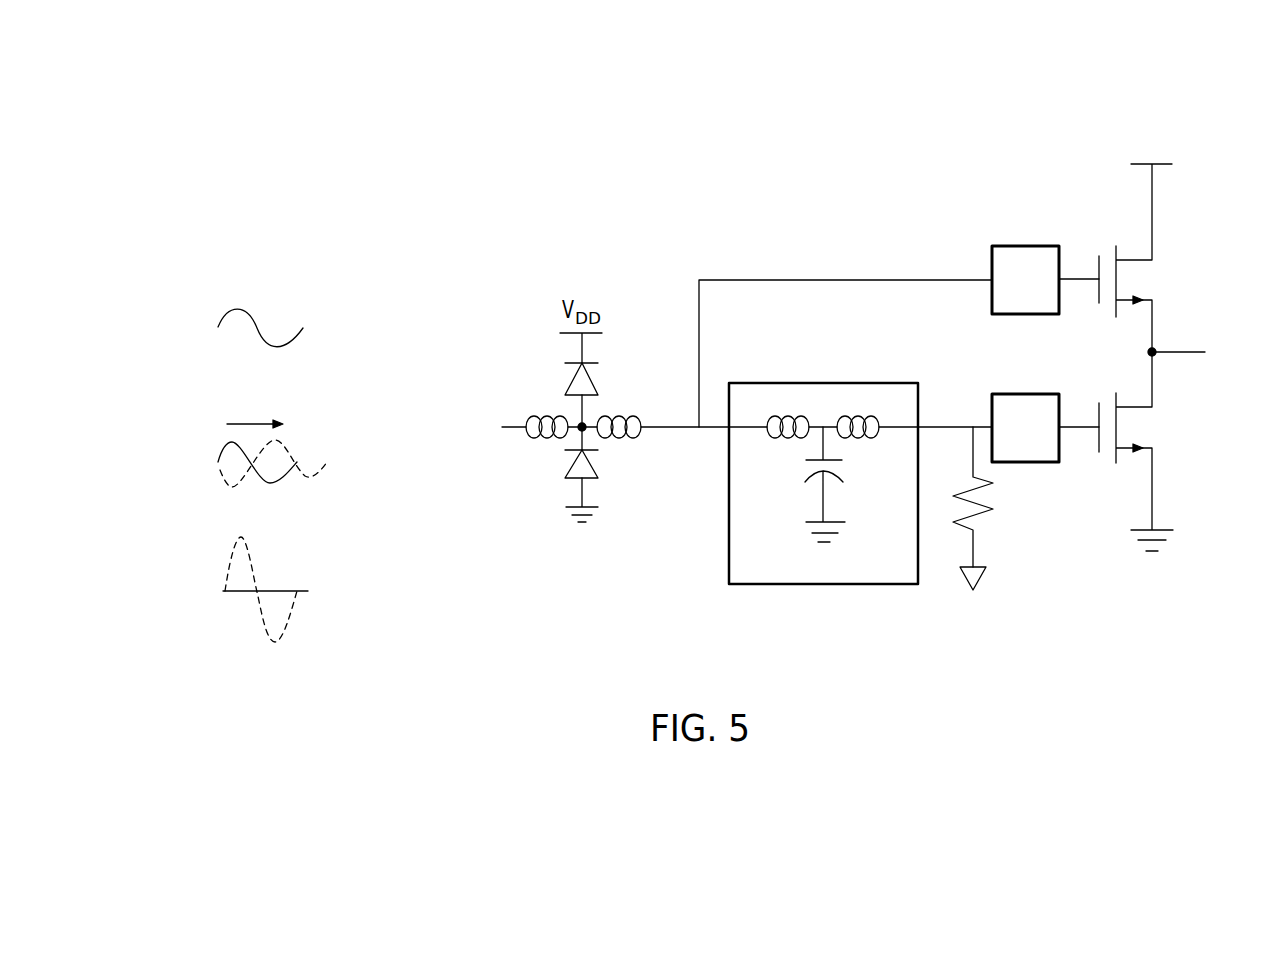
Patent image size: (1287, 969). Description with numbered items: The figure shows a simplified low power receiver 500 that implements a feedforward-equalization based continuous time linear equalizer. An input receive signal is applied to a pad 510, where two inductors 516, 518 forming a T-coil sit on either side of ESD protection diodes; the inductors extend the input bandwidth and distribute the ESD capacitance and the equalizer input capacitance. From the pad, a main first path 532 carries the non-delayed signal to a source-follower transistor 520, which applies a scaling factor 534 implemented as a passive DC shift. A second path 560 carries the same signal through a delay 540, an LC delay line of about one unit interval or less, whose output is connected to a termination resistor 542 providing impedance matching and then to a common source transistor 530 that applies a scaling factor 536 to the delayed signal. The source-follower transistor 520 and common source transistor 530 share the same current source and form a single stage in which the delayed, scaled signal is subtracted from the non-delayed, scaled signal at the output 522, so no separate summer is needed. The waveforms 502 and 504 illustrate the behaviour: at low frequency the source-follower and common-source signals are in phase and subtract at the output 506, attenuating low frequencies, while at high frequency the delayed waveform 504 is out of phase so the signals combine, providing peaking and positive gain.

The low power receiver 500 is at (683, 93).
The source-follower input waveform 502 is at (320, 303).
The common-source input waveform 504 is at (320, 425).
The output waveform 506 is at (320, 572).
The pad 510 is at (513, 430).
The inductor 516 is at (539, 417).
The inductor 518 is at (628, 417).
The source-follower transistor 520 is at (1163, 274).
The output 522 is at (1148, 380).
The common source transistor 530 is at (1158, 429).
The main first path 532 is at (797, 277).
The scaling factor 534 is at (1012, 246).
The scaling factor 536 is at (1012, 394).
The delay 540 is at (818, 381).
The termination resistor 542 is at (988, 527).
The second path 560 is at (672, 553).